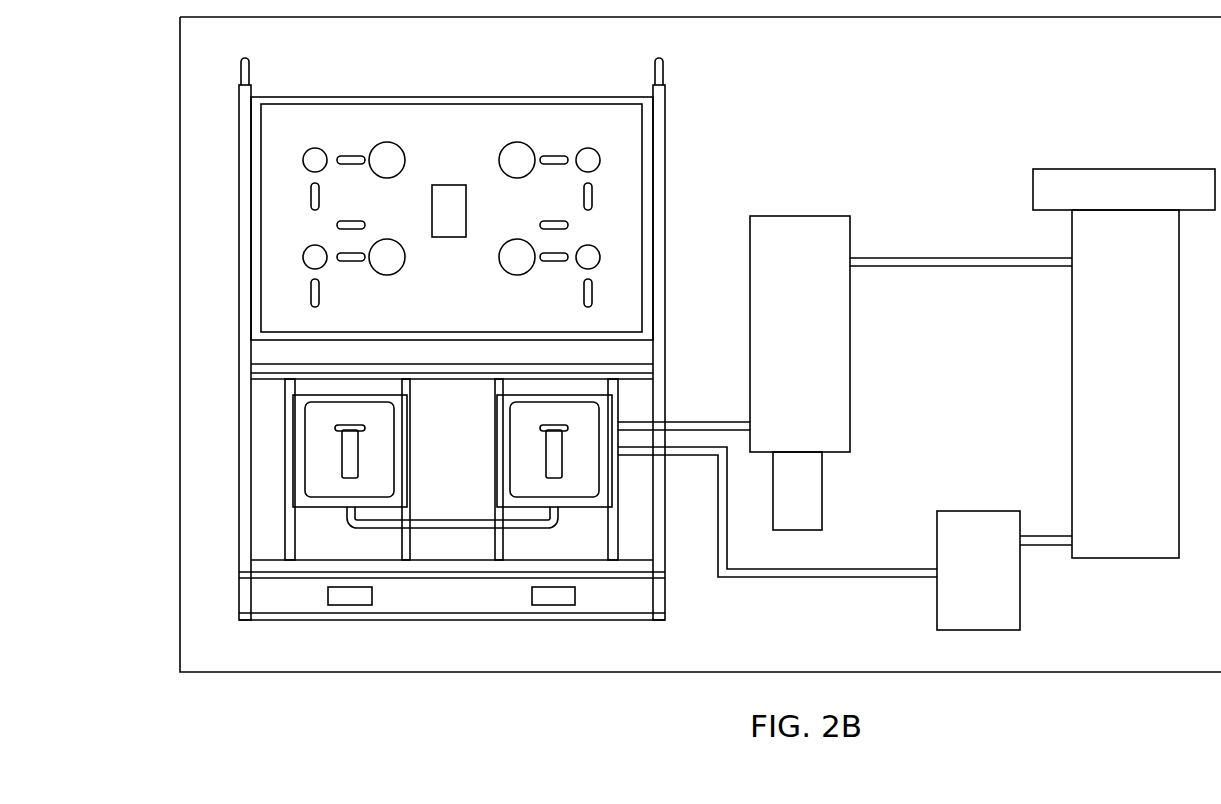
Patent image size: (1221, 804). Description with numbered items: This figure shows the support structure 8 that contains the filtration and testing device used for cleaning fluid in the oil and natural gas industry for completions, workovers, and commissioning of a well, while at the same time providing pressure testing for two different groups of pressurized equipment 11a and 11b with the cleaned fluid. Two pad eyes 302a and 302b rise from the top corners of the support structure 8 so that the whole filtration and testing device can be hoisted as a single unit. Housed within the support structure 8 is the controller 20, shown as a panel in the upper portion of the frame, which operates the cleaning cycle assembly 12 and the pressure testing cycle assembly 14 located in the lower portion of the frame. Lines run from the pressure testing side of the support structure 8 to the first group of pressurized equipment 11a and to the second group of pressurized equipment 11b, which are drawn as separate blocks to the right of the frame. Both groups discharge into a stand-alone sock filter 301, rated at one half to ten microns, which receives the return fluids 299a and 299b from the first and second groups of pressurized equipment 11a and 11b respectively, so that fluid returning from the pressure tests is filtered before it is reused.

The support structure 8 is at (665, 130).
The controller 20 is at (428, 97).
The pad eye 302a is at (252, 62).
The pad eye 302b is at (656, 60).
The cleaning cycle assembly 12 is at (305, 447).
The pressure testing cycle assembly 14 is at (599, 467).
The first group of pressurized equipment 11a is at (811, 216).
The second group of pressurized equipment 11b is at (985, 511).
The return fluid 299a is at (940, 268).
The return fluid 299b is at (1028, 533).
The sock filter 301 is at (1070, 380).